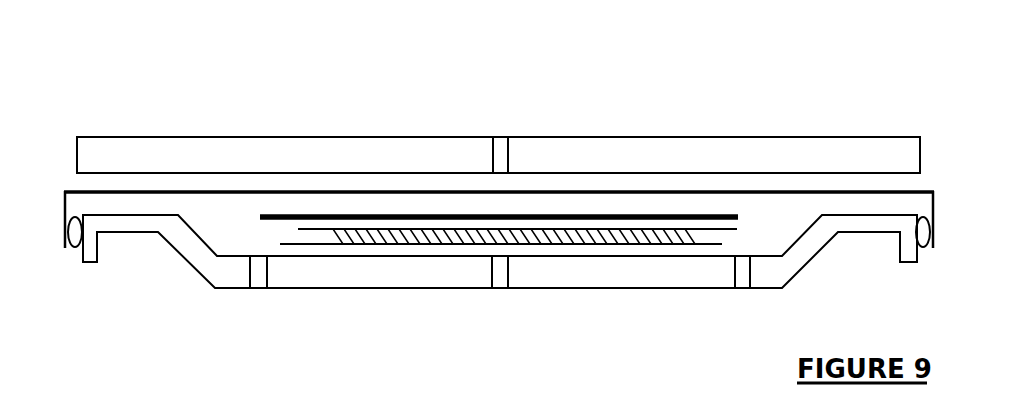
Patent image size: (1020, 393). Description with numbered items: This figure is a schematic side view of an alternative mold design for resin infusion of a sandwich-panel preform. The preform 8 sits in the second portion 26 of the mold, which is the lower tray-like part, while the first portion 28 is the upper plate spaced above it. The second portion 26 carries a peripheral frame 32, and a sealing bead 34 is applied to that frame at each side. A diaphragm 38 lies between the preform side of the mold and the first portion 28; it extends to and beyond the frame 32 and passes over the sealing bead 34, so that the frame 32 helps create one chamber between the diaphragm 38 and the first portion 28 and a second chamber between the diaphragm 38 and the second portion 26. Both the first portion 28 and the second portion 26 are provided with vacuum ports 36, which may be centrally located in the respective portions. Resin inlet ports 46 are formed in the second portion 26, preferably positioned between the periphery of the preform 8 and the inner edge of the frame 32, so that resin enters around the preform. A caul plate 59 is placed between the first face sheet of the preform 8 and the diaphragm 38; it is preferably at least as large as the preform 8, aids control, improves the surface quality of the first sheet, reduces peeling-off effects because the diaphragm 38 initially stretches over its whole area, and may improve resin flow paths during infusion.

The preform 8 is at (319, 237).
The second portion 26 is at (182, 256).
The first portion 28 is at (92, 137).
The peripheral frame 32 is at (807, 247).
The sealing bead 34 is at (75, 232).
The vacuum ports 36 is at (500, 152).
The diaphragm 38 is at (218, 192).
The resin inlet ports 46 is at (258, 270).
The caul plate 59 is at (724, 215).